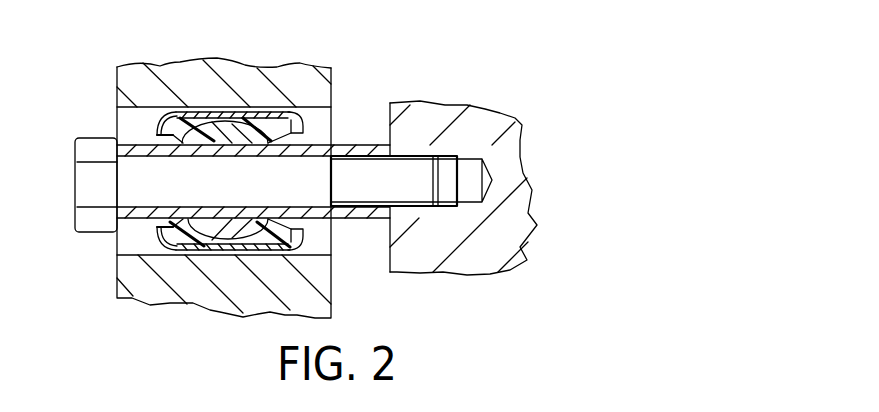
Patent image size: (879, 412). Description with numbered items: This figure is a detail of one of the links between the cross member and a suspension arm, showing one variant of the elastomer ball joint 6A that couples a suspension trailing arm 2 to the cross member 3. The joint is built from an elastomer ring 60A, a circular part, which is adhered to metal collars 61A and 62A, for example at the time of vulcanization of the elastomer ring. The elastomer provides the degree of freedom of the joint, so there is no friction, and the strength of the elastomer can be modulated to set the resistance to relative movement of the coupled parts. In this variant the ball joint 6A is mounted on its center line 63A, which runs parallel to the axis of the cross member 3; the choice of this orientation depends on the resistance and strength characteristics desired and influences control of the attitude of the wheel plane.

The suspension trailing arm 2 is at (140, 285).
The cross member 3 is at (508, 232).
The ball joint 6A is at (508, 65).
The elastomer ring 60A is at (264, 122).
The metal collar 61A is at (196, 117).
The metal collar 62A is at (310, 215).
The center line of ball joint 63A is at (160, 177).